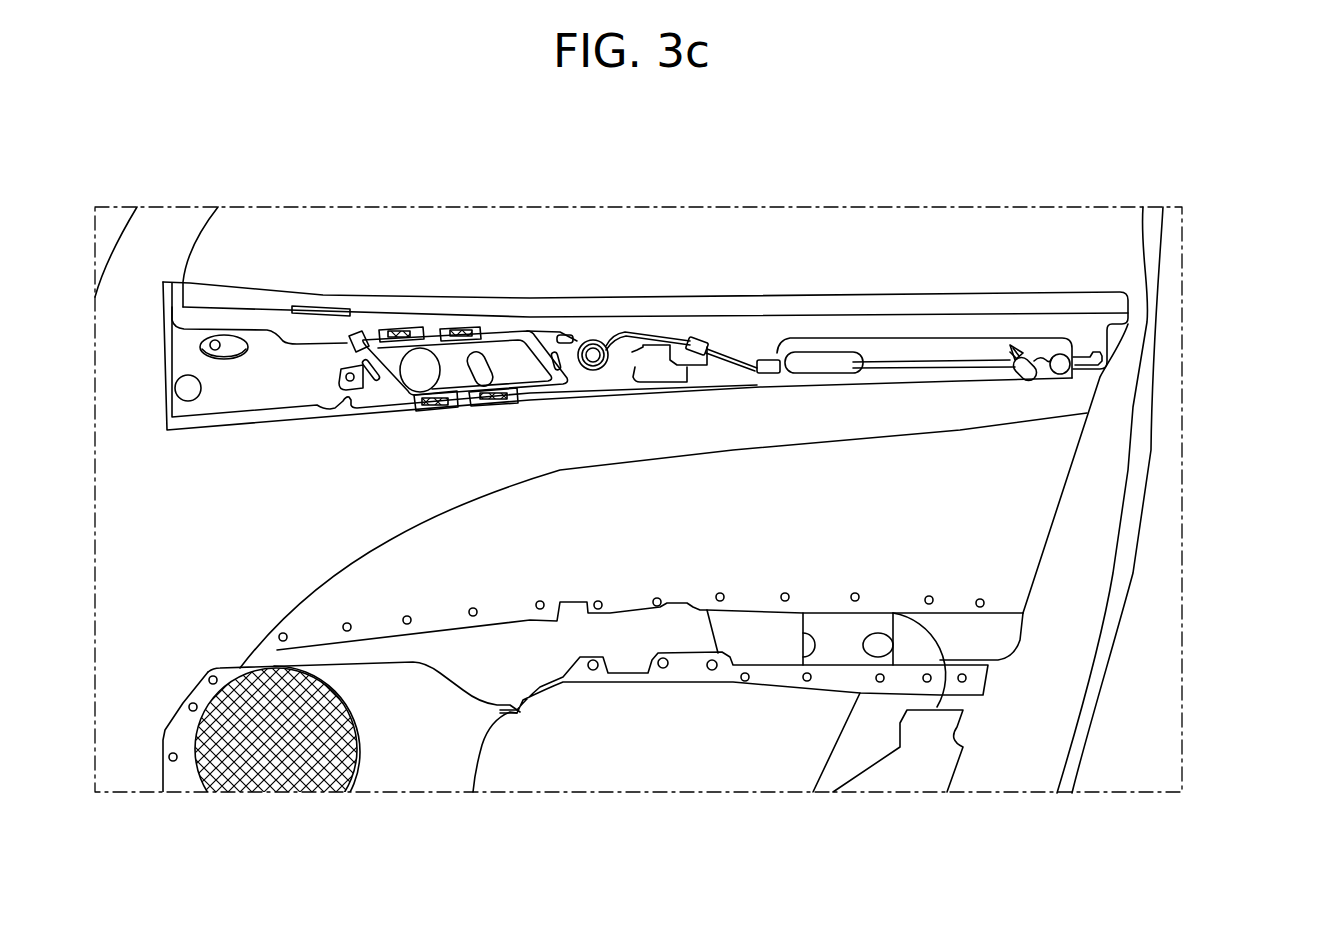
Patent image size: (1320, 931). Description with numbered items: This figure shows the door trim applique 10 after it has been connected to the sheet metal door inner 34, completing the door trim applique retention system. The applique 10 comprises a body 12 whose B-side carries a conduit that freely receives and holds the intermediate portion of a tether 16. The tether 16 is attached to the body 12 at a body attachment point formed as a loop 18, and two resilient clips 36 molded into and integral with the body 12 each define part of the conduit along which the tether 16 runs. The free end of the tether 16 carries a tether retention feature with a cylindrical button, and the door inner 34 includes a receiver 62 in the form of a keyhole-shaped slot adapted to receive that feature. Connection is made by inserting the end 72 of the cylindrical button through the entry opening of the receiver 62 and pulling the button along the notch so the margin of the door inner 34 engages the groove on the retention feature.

The door trim applique 10 is at (781, 275).
The body 12 is at (948, 307).
The tether 16 is at (624, 333).
The loop 18 is at (589, 340).
The sheet metal door inner 34 is at (1083, 398).
The resilient clips 36 is at (700, 347).
The receiver 62 is at (1053, 377).
The end of the cylindrical button 72 is at (1017, 322).